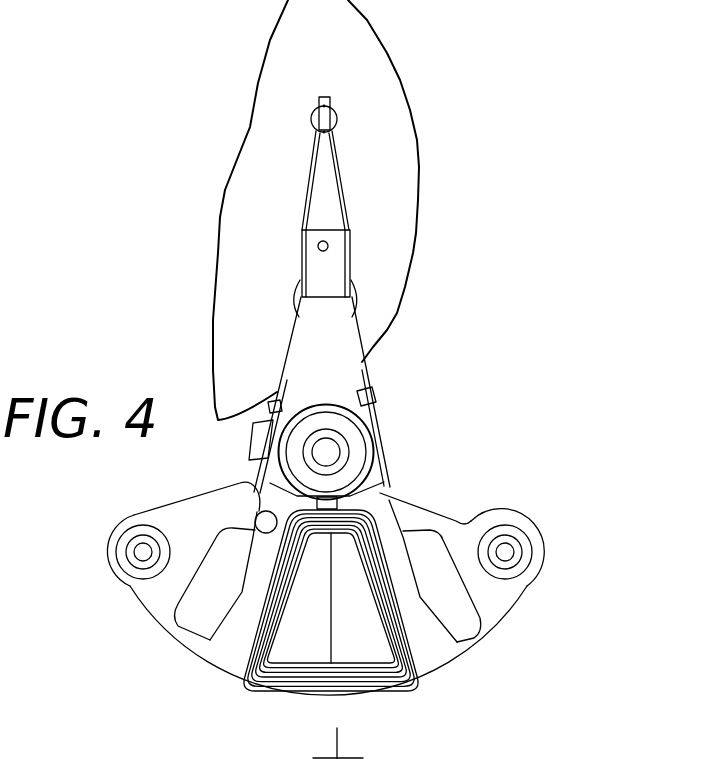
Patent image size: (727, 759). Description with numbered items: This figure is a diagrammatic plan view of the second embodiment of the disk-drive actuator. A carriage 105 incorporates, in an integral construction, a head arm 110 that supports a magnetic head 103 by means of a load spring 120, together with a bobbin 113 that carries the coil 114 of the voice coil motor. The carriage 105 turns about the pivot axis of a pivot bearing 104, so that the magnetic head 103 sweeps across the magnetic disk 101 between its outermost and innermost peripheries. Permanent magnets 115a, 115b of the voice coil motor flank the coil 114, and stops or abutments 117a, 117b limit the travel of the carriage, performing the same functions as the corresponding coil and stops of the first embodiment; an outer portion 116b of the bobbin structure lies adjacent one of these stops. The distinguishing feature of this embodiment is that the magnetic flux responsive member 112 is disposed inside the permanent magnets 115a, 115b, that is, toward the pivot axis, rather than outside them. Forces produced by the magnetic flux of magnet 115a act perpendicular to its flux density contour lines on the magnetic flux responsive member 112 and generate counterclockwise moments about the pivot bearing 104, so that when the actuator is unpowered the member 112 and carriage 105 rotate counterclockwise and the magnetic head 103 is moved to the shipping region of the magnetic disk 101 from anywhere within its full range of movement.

The magnetic disk 101 is at (387, 53).
The magnetic head 103 is at (331, 99).
The load spring 120 is at (331, 201).
The head arm 110 is at (334, 262).
The carriage 105 is at (339, 348).
The pivot bearing 104 is at (382, 440).
The magnetic flux responsive member 112 is at (259, 512).
The permanent magnet 115a is at (208, 616).
The permanent magnet 115b is at (420, 537).
The stop 117a is at (141, 553).
The stop 117b is at (508, 553).
The outer portion of coil holder 116b is at (493, 610).
The bobbin 113 is at (237, 642).
The coil 114 is at (343, 681).